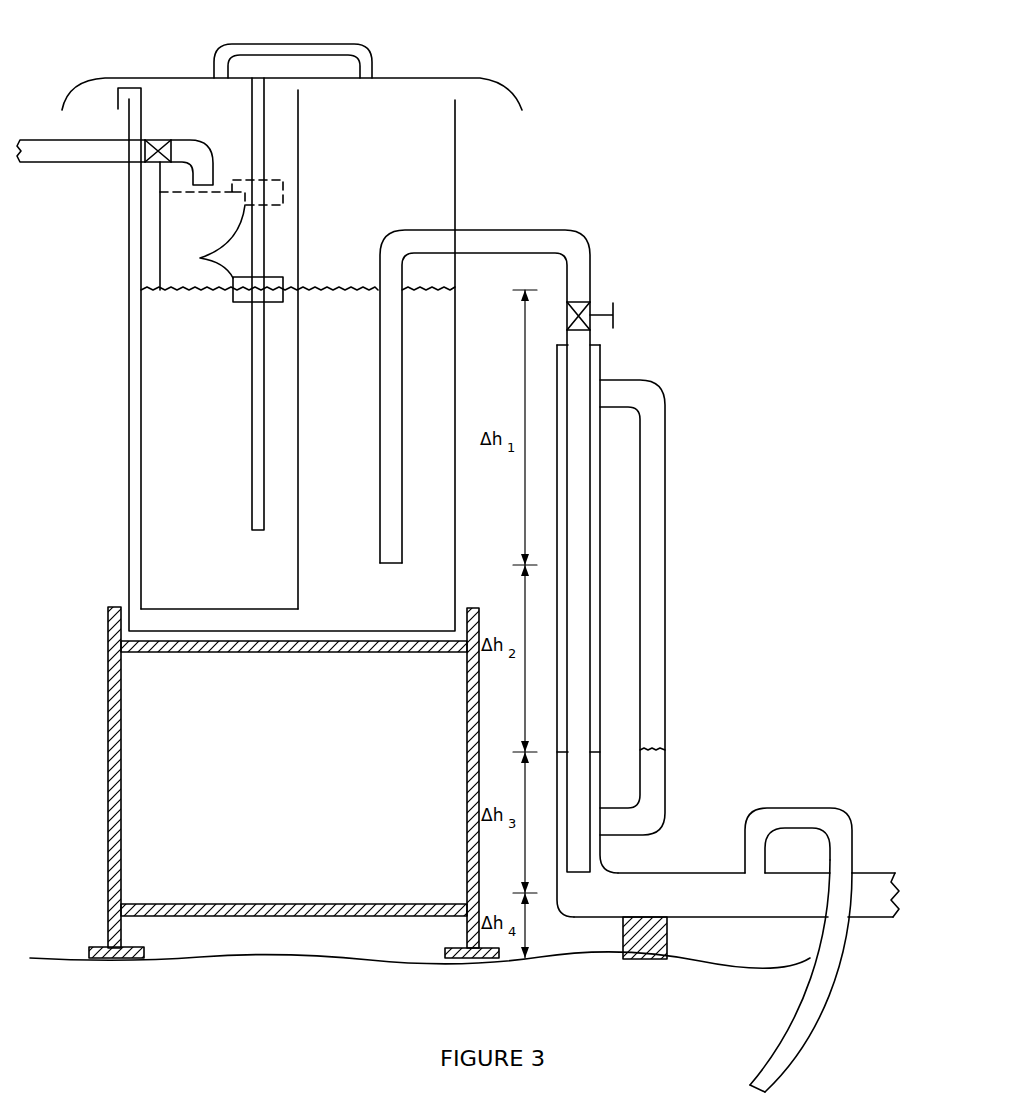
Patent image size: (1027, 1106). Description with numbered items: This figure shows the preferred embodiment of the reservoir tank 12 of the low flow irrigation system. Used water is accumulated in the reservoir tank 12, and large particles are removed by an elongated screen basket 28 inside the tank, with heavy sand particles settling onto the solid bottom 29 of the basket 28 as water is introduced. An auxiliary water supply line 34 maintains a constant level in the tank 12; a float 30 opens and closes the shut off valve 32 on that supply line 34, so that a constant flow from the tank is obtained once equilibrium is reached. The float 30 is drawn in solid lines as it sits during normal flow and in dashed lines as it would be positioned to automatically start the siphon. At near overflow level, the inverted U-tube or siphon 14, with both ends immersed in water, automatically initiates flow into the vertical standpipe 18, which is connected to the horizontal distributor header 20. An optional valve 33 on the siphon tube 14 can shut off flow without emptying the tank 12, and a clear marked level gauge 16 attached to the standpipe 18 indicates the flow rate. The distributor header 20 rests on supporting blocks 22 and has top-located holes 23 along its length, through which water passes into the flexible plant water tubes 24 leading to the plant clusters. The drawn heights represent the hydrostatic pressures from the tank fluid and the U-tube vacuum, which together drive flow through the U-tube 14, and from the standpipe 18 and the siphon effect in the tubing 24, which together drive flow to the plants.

The reservoir tank 12 is at (492, 47).
The siphon or U-tube 14 is at (550, 237).
The level gauge 16 is at (654, 468).
The standpipe 18 is at (602, 595).
The distributor header 20 is at (738, 905).
The block 22 is at (632, 962).
The holes 23 is at (745, 867).
The plant water tube 24 is at (790, 807).
The screen basket 28 is at (141, 443).
The solid bottom 29 is at (176, 608).
The float 30 is at (200, 258).
The shut off valve 32 is at (163, 142).
The valve 33 is at (613, 313).
The auxiliary water supply line 34 is at (83, 157).